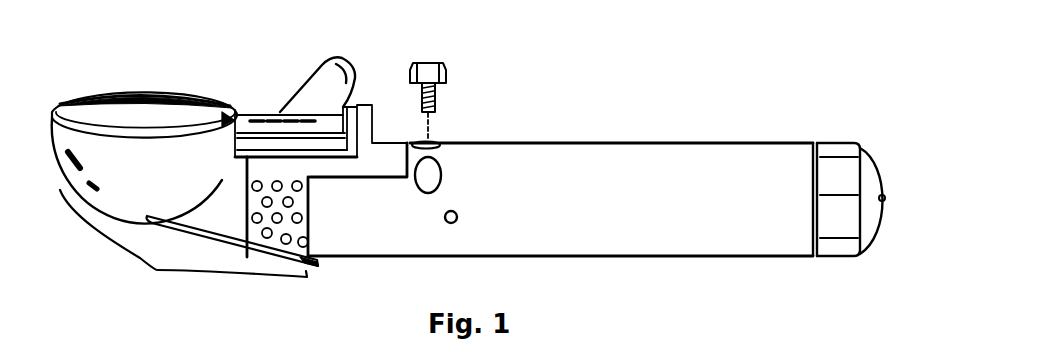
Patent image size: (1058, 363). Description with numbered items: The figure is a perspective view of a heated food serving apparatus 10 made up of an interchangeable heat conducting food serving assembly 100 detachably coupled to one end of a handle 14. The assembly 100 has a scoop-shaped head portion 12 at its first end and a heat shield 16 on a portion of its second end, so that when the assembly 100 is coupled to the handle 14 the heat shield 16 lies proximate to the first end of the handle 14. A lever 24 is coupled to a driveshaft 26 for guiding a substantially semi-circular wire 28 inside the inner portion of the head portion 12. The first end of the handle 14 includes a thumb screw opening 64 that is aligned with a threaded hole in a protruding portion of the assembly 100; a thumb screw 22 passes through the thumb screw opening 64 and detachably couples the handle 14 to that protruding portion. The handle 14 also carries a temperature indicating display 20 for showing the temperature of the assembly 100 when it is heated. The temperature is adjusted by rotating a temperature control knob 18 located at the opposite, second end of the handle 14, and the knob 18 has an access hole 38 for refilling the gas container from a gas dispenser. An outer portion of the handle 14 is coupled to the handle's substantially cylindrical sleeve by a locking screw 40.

The heated food serving apparatus 10 is at (498, 172).
The scoop-shaped head portion 12 is at (147, 182).
The handle 14 is at (610, 190).
The heat shield 16 is at (308, 226).
The temperature control knob 18 is at (843, 247).
The temperature indicating display 20 is at (427, 180).
The thumb screw 22 is at (440, 69).
The lever 24 is at (337, 62).
The driveshaft 26 is at (243, 113).
The substantially semi-circular wire 28 is at (142, 101).
The access hole 38 is at (886, 195).
The locking screw 40 is at (458, 218).
The thumb screw opening 64 is at (433, 140).
The interchangeable heat conducting food serving assembly 100 is at (158, 278).